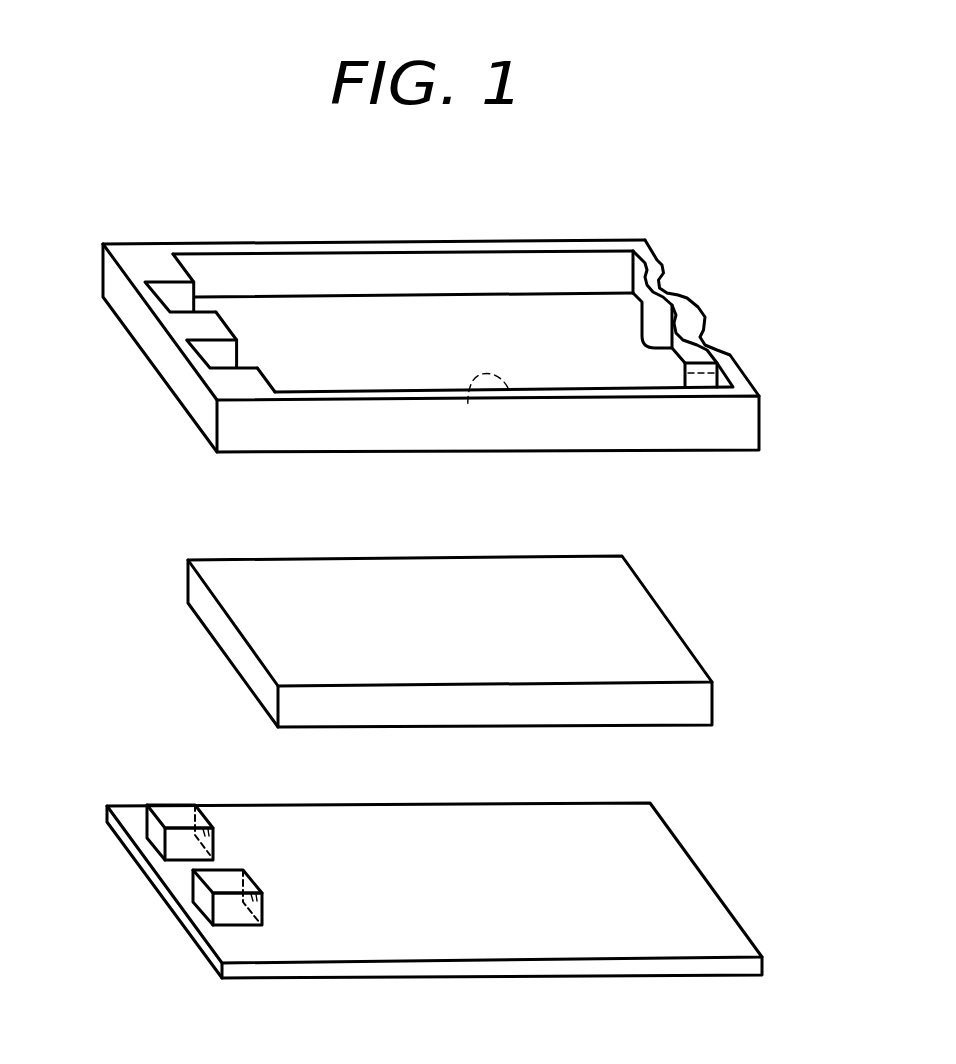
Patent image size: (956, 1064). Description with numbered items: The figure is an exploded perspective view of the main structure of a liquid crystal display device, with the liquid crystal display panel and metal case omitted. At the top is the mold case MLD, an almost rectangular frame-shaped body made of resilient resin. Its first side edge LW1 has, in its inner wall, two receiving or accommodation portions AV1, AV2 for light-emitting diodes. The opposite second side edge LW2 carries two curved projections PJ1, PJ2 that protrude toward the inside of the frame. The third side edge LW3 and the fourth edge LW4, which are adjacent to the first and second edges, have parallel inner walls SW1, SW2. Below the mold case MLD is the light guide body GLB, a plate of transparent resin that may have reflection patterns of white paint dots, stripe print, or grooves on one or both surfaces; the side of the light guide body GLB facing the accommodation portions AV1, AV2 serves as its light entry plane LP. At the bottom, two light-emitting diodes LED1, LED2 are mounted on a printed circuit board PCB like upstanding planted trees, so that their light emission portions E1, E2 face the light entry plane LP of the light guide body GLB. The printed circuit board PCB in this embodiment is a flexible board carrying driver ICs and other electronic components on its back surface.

The mold case MLD is at (446, 332).
The first side edge LW1 is at (164, 419).
The second side edge LW2 is at (684, 260).
The third side edge LW3 is at (548, 219).
The fourth edge LW4 is at (679, 468).
The inner wall SW1 is at (440, 270).
The inner wall SW2 is at (508, 390).
The light-emitting diode accommodation portion AV1 is at (167, 298).
The light-emitting diode accommodation portion AV2 is at (213, 355).
The curved projection PJ1 is at (655, 323).
The curved projection PJ2 is at (720, 370).
The light guide body GLB is at (427, 619).
The light entry plane LP is at (215, 620).
The light-emitting diode LED1 is at (221, 800).
The light-emitting diode LED2 is at (231, 927).
The light emission portion E1 is at (213, 832).
The light emission portion E2 is at (262, 897).
The printed circuit board PCB is at (285, 982).